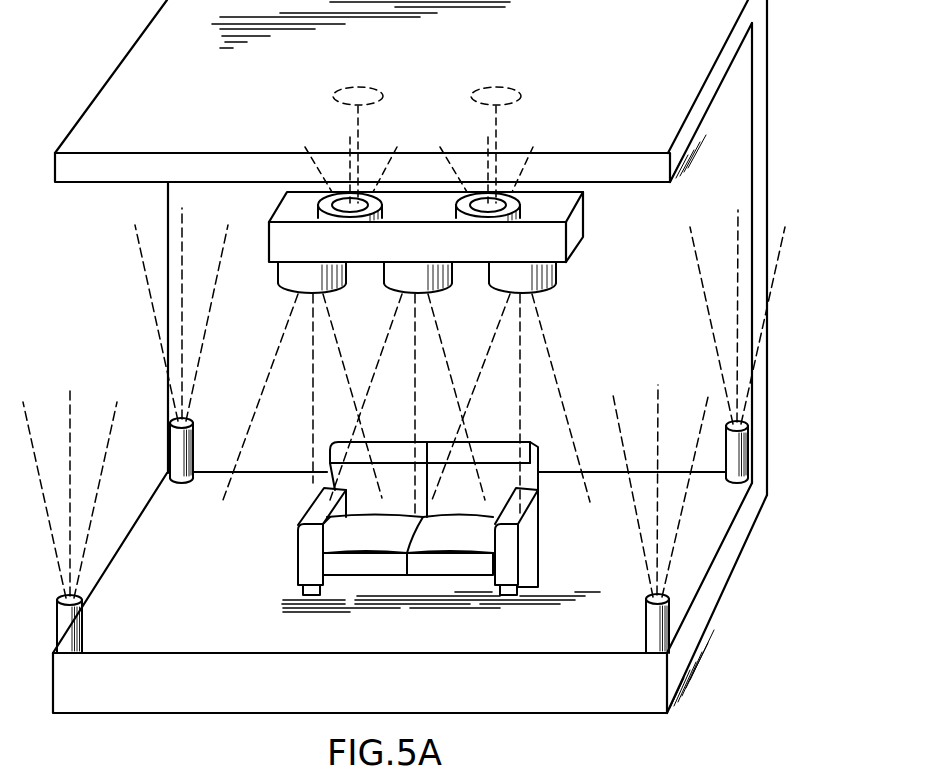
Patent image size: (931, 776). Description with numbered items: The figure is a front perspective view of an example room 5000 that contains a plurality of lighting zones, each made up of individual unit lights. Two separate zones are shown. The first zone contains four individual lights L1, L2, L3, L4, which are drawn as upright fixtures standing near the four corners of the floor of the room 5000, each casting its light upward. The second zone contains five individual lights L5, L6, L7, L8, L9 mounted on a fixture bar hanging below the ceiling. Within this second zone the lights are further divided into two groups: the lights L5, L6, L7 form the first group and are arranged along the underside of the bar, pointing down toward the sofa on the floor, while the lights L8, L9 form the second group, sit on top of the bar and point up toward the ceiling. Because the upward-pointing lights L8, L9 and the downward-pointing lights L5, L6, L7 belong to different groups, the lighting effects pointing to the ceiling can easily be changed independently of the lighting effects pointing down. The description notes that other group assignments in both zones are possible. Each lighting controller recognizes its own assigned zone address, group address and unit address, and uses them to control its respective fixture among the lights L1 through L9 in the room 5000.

The room 5000 is at (188, 42).
The individual light L1 is at (83, 629).
The individual light L2 is at (668, 622).
The individual light L3 is at (185, 479).
The individual light L4 is at (749, 450).
The individual light L5 is at (288, 284).
The individual light L6 is at (400, 284).
The individual light L7 is at (557, 278).
The individual light L8 is at (320, 212).
The individual light L9 is at (520, 210).